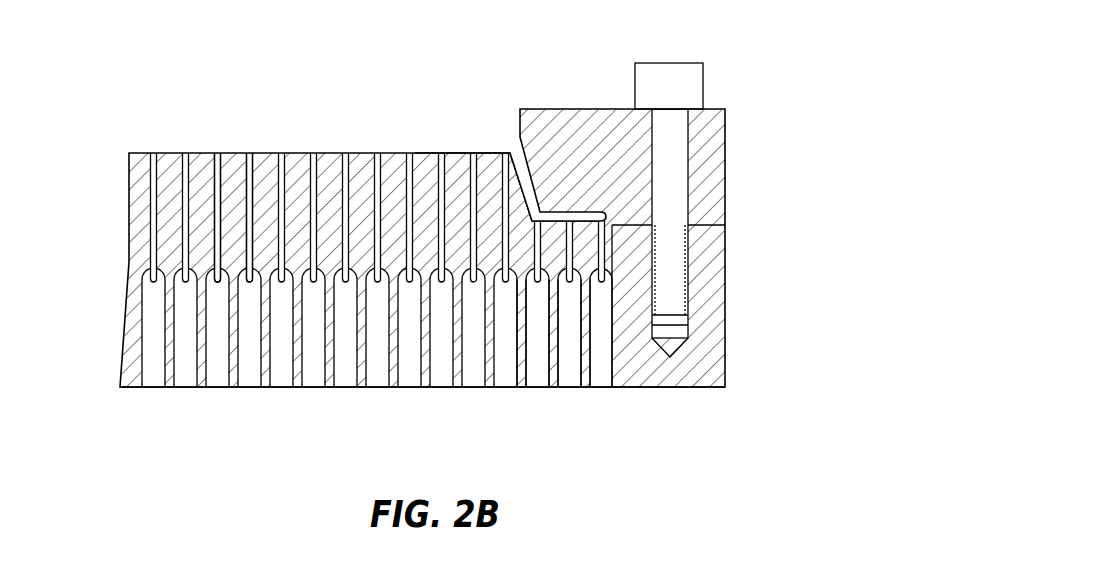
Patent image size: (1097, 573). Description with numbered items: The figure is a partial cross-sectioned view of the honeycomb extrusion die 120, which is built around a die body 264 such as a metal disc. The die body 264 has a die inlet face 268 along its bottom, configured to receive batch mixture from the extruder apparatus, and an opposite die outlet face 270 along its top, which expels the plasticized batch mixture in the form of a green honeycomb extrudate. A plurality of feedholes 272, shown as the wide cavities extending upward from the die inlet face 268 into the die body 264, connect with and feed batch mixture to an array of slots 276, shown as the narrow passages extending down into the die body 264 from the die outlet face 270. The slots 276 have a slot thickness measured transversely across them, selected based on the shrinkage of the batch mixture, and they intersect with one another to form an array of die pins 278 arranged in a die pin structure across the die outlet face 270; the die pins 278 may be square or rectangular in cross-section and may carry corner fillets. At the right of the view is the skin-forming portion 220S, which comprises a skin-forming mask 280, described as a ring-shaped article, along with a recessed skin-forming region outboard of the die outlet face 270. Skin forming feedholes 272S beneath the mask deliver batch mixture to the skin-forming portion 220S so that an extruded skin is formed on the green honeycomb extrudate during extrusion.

The honeycomb extrusion die 120 is at (276, 60).
The die body 264 is at (129, 190).
The die inlet face 268 is at (150, 388).
The die outlet face 270 is at (365, 153).
The feedholes 272 is at (185, 339).
The skin forming feedholes 272S is at (520, 363).
The slots 276 is at (249, 153).
The die pins 278 is at (425, 155).
The skin-forming portion 220S is at (527, 188).
The skin-forming mask 280 is at (715, 108).